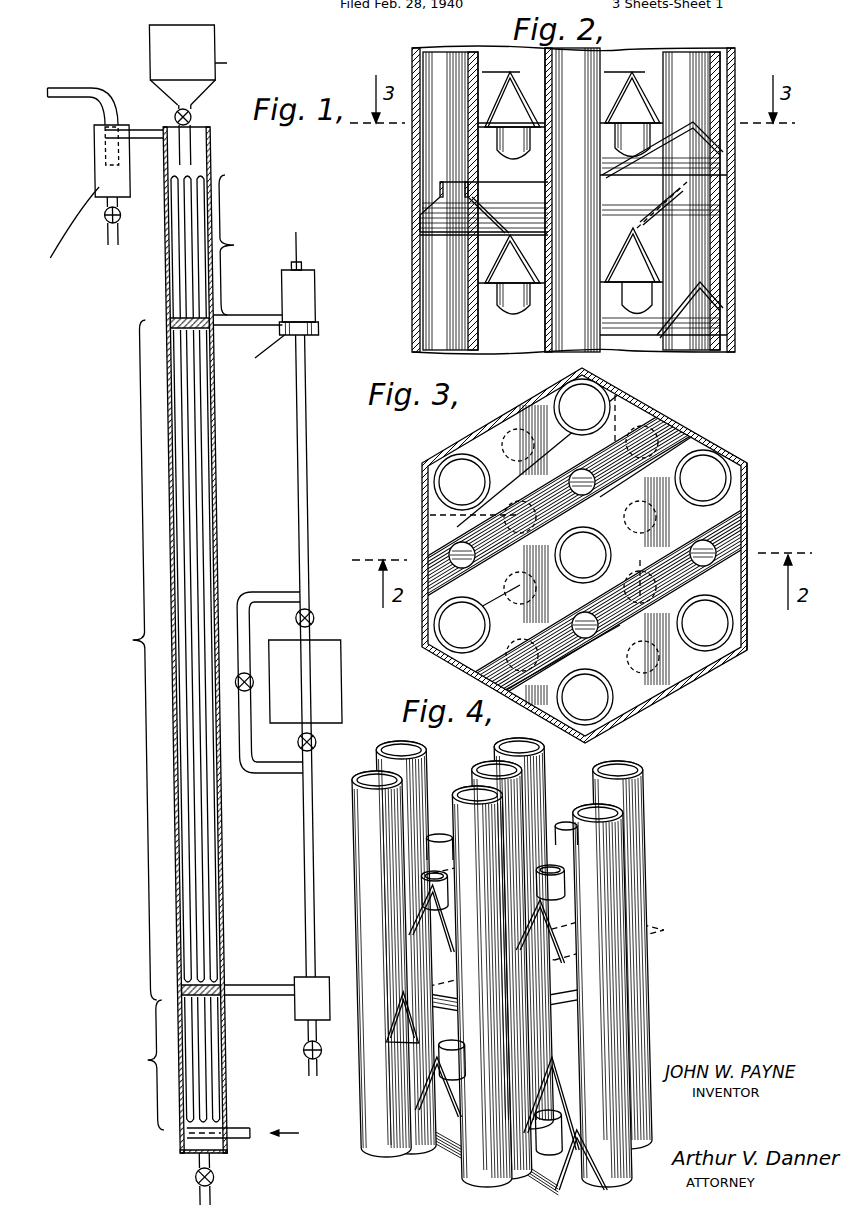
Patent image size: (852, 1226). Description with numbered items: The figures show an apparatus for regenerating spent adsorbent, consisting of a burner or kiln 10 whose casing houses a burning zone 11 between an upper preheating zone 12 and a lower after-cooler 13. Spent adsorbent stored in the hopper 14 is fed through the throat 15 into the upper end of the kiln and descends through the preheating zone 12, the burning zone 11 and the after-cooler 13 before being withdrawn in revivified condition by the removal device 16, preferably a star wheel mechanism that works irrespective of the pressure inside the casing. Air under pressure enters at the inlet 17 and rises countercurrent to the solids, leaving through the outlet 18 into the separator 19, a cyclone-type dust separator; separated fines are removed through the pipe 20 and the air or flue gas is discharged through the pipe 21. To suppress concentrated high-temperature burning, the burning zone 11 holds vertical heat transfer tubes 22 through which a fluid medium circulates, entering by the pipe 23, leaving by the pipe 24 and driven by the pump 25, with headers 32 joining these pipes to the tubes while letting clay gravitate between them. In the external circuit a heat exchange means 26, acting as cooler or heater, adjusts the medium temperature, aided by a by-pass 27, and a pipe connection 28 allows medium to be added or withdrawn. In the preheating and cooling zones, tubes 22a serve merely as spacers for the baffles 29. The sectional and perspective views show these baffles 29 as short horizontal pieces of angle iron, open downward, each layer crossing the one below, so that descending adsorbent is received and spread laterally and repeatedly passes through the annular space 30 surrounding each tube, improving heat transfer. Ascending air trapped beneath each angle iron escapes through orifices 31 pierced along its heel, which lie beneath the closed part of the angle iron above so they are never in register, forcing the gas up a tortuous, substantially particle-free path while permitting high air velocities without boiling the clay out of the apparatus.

In FIG. 1, the burner or kiln 10 is at (171, 543).
In FIG. 2, the burner or kiln 10 is at (733, 85).
In FIG. 3, the burner or kiln 10 is at (744, 645).
In FIG. 1, the burning zone 11 is at (97, 660).
In FIG. 1, the preheating zone 12 is at (240, 245).
In FIG. 1, the after-cooler 13 is at (104, 1065).
In FIG. 1, the hopper 14 is at (225, 42).
In FIG. 1, the throat 15 is at (203, 119).
In FIG. 1, the removal device 16 is at (186, 1178).
In FIG. 1, the inlet 17 is at (233, 1139).
In FIG. 1, the outlet 18 is at (143, 128).
In FIG. 1, the separator 19 is at (102, 152).
In FIG. 1, the pipe 20 is at (127, 213).
In FIG. 1, the pipe 21 is at (84, 85).
In FIG. 1, the heat transfer tubes 22 is at (198, 397).
In FIG. 2, the heat transfer tubes 22 is at (476, 68).
In FIG. 3, the heat transfer tubes 22 is at (582, 403).
In FIG. 4, the heat transfer tubes 22 is at (370, 770).
In FIG. 1, the spacing tubes 22a is at (202, 283).
In FIG. 1, the pipe 23 is at (247, 985).
In FIG. 1, the pipe 24 is at (262, 306).
In FIG. 1, the pump 25 is at (321, 305).
In FIG. 1, the heat exchange means 26 is at (340, 640).
In FIG. 1, the by-pass 27 is at (277, 582).
In FIG. 1, the pipe connection 28 is at (298, 1037).
In FIG. 2, the baffles 29 is at (487, 165).
In FIG. 3, the baffles 29 is at (663, 440).
In FIG. 4, the baffles 29 is at (557, 927).
In FIG. 2, the annular space 30 is at (430, 50).
In FIG. 3, the annular space 30 is at (470, 447).
In FIG. 2, the orifices 31 is at (522, 70).
In FIG. 3, the orifices 31 is at (450, 543).
In FIG. 4, the orifices 31 is at (440, 832).
In FIG. 1, the headers 32 is at (205, 325).